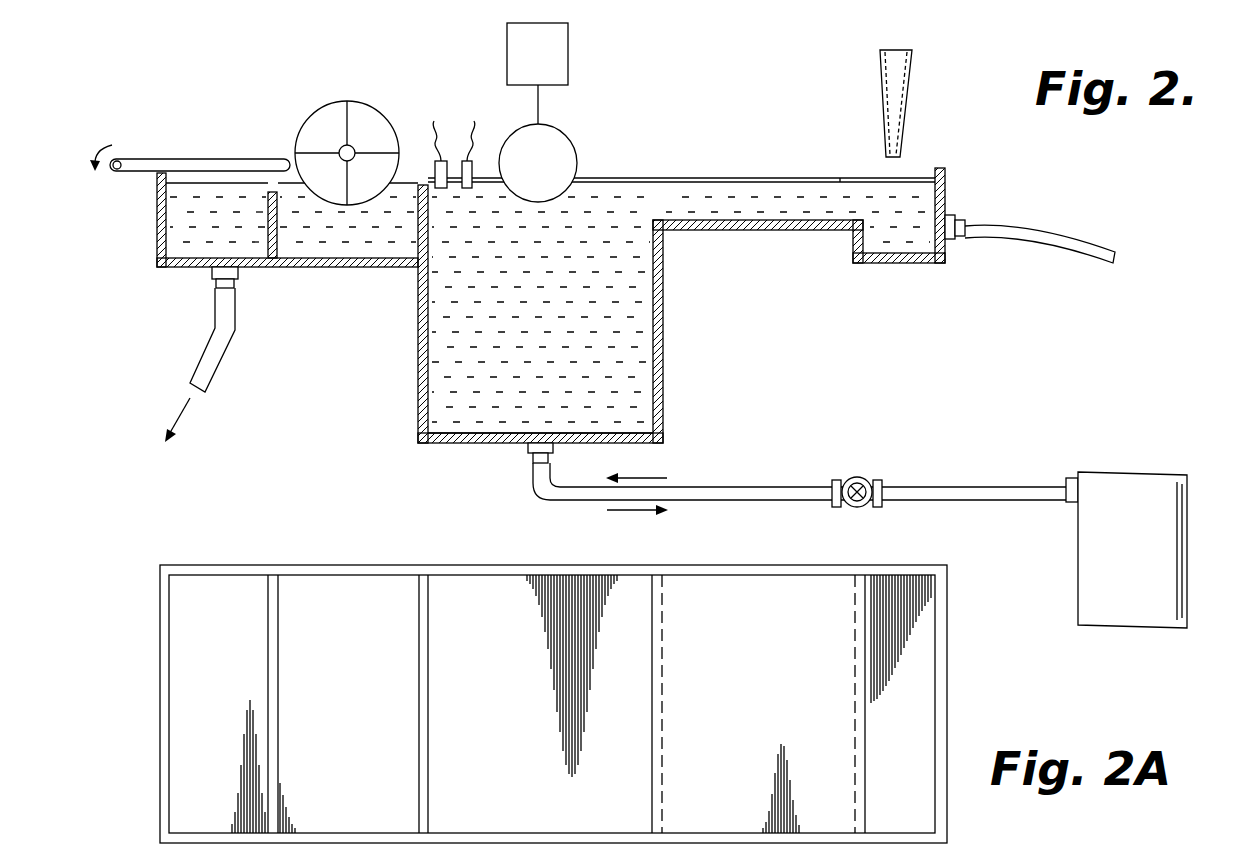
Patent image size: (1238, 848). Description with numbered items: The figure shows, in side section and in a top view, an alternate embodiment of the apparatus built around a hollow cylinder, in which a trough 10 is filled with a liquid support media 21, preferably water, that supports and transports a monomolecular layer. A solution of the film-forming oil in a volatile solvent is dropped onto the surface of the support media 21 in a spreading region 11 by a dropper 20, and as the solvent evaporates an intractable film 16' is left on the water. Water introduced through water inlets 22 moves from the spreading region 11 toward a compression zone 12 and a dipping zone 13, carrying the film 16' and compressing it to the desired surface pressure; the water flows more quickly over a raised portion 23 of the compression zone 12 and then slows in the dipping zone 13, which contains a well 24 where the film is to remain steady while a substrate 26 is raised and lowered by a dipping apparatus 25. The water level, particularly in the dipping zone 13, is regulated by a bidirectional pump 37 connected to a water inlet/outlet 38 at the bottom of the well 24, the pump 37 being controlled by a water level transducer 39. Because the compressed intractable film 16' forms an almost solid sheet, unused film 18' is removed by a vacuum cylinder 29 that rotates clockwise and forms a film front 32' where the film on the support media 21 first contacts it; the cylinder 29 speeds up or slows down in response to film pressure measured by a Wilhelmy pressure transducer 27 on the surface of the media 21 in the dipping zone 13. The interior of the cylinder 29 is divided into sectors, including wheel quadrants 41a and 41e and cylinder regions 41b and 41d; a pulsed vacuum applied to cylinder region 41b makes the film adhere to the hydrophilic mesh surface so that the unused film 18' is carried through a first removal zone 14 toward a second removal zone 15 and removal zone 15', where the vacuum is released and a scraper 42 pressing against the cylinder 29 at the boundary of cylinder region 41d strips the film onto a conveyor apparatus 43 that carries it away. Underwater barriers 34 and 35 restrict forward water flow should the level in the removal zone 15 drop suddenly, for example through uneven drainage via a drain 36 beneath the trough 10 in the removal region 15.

In FIG. 2, the trough 10 is at (610, 325).
In FIG. 2A, the trough 10 is at (510, 621).
In FIG. 2, the spreading region 11 is at (912, 212).
In FIG. 2A, the spreading region 11 is at (905, 700).
In FIG. 2, the compression zone 12 is at (771, 192).
In FIG. 2A, the compression zone 12 is at (804, 704).
In FIG. 2, the dipping zone 13 is at (603, 217).
In FIG. 2A, the dipping zone 13 is at (591, 704).
In FIG. 2, the first removal zone 14 is at (333, 265).
In FIG. 2A, the first removal zone 14 is at (354, 704).
In FIG. 2A, the second removal zone 15 is at (173, 704).
In FIG. 2, the removal zone 15' is at (233, 220).
In FIG. 2, the intractable film 16' is at (681, 128).
In FIG. 2, the unused film 18' is at (383, 269).
In FIG. 2, the dropper 20 is at (912, 64).
In FIG. 2, the support media 21 is at (840, 175).
In FIG. 2, the water inlets 22 is at (1040, 242).
In FIG. 2, the raised portion 23 is at (820, 232).
In FIG. 2, the well 24 is at (663, 395).
In FIG. 2, the dipping apparatus 25 is at (568, 42).
In FIG. 2, the substrate 26 is at (560, 152).
In FIG. 2, the Wilhelmy pressure transducer 27 is at (472, 190).
In FIG. 2, the vacuum cylinder 29 is at (315, 110).
In FIG. 2, the film front 32' is at (405, 123).
In FIG. 2, the underwater barrier 34 is at (268, 241).
In FIG. 2, the underwater barrier 35 is at (418, 240).
In FIG. 2, the drain 36 is at (205, 360).
In FIG. 2, the bidirectional pump 37 is at (1150, 500).
In FIG. 2, the water inlet/outlet 38 is at (790, 482).
In FIG. 2, the water level transducer 39 is at (465, 161).
In FIG. 2, the wheel quadrant 41a is at (363, 128).
In FIG. 2, the cylinder region 41b is at (365, 177).
In FIG. 2, the cylinder region 41d is at (315, 135).
In FIG. 2, the wheel quadrant 41e is at (325, 177).
In FIG. 2, the scraper 42 is at (288, 163).
In FIG. 2, the conveyor apparatus 43 is at (130, 157).